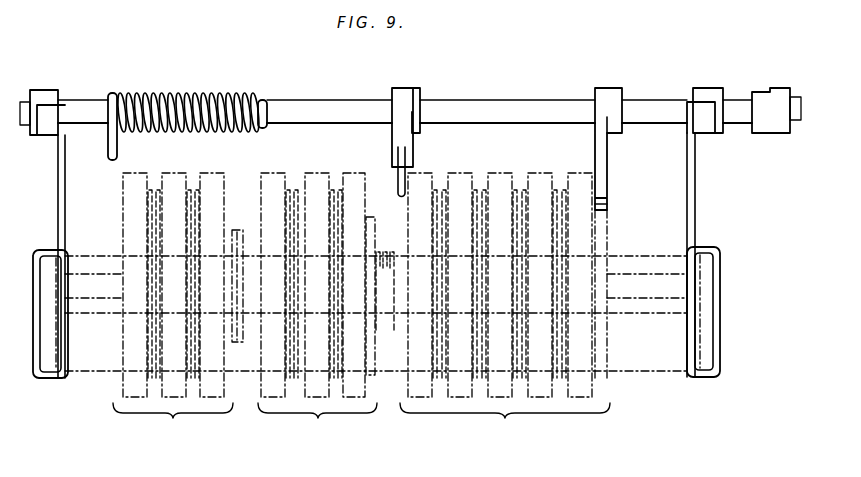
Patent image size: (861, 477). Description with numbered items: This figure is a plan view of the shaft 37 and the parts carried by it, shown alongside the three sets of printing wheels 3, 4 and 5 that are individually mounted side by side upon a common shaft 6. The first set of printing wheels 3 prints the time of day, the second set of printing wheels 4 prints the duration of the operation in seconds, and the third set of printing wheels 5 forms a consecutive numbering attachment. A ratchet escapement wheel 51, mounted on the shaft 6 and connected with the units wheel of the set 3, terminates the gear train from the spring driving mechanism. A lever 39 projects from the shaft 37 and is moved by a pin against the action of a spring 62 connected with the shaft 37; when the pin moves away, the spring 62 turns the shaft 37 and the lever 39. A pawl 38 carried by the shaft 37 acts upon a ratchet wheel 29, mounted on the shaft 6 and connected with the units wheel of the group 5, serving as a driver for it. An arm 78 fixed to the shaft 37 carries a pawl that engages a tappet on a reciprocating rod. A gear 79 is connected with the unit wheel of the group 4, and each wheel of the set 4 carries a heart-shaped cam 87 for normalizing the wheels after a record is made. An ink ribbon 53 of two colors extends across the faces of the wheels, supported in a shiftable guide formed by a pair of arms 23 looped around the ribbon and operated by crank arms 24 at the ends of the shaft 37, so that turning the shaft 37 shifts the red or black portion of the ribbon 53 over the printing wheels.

The first set of printing wheels 3 is at (173, 314).
The second set of printing wheels 4 is at (317, 314).
The third set of printing wheels 5 is at (505, 312).
The common shaft 6 is at (92, 298).
The arms 23 is at (46, 378).
The crank arms 24 is at (43, 90).
The ratchet wheel 29 is at (612, 228).
The shaft 37 is at (505, 100).
The pawl 38 is at (608, 165).
The lever 39 is at (780, 88).
The ratchet escapement wheel 51 is at (237, 230).
The ink ribbon 53 is at (714, 288).
The spring 62 is at (173, 93).
The arm 78 is at (395, 88).
The gear 79 is at (366, 342).
The heart-shaped cam 87 is at (391, 268).